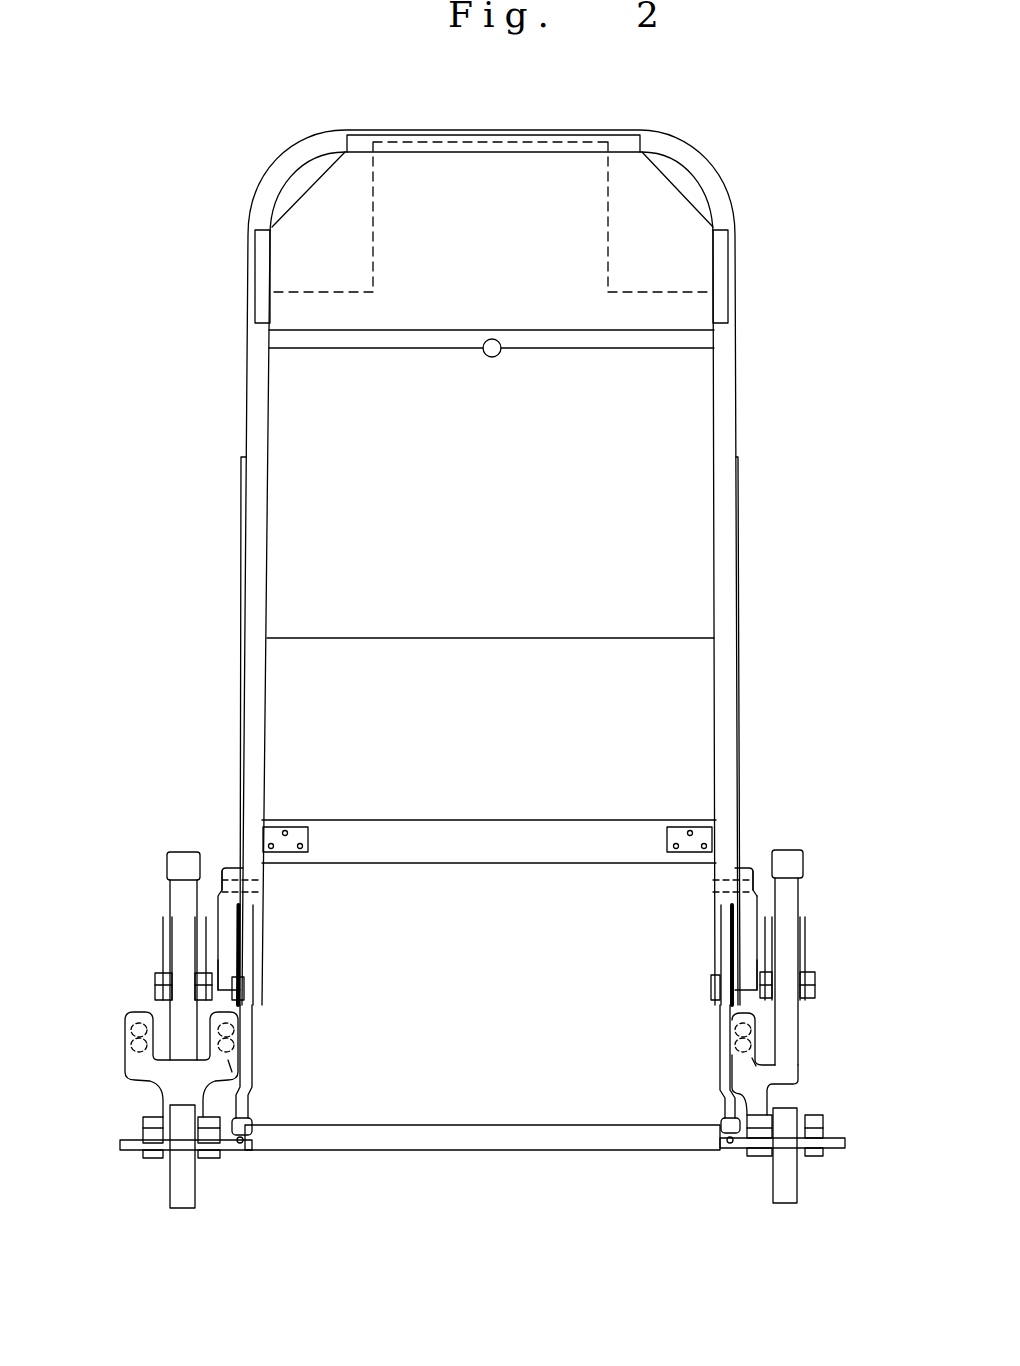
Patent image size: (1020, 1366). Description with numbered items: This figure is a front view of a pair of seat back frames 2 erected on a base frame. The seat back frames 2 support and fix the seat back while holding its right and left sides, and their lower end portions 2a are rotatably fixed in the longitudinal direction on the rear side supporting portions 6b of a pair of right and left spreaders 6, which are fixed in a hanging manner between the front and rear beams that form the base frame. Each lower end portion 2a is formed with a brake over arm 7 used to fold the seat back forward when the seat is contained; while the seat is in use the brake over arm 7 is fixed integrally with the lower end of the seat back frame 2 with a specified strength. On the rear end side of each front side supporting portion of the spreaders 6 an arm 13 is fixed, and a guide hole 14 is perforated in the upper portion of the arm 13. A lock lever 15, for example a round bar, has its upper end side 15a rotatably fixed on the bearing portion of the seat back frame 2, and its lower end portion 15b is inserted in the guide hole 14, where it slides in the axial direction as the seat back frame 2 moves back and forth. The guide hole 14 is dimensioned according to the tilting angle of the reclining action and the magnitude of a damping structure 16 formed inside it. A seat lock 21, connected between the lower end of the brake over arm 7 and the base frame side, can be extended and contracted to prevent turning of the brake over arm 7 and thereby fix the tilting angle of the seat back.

The seat back frame 2 is at (250, 553).
The lower end portion of the seat back frame 2a is at (248, 947).
The spreader 6 is at (158, 1182).
The rear side supporting portion 6b is at (180, 897).
The brake over arm 7 is at (250, 1028).
The arm 13 is at (140, 1068).
The guide hole 14 is at (130, 1013).
The lock lever 15 is at (229, 923).
The upper end side of the lock lever 15a is at (232, 866).
The lower end portion of the lock lever 15b is at (236, 1037).
The damping structure 16 is at (238, 1062).
The seat lock 21 is at (255, 1136).